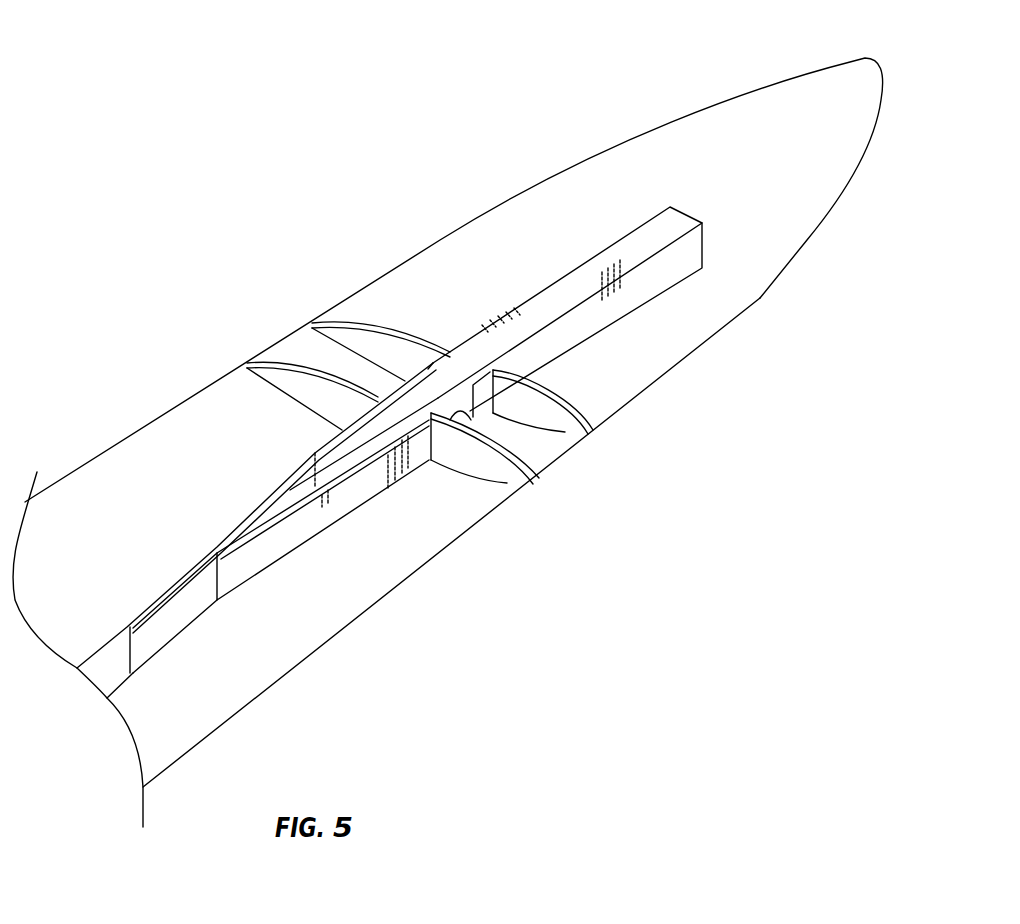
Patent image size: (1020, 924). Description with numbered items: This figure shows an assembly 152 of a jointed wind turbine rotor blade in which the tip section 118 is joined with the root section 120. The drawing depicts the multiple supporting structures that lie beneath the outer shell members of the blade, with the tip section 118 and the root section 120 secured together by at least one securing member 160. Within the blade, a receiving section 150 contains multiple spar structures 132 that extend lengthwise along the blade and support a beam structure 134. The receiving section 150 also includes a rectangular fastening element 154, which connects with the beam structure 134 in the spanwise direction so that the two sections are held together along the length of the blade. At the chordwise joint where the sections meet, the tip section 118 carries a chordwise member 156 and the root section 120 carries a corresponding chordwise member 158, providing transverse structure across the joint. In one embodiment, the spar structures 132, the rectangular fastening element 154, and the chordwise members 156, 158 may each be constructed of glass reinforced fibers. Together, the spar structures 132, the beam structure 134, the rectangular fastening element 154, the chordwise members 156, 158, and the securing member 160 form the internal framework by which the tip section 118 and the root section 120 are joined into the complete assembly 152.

The tip section 118 is at (638, 132).
The root section 120 is at (78, 480).
The spar structures 132 is at (248, 508).
The beam structure 134 is at (615, 268).
The receiving section 150 is at (397, 547).
The assembly 152 is at (167, 214).
The rectangular fastening element 154 is at (322, 467).
The chordwise member 156 is at (585, 403).
The chordwise member 158 is at (500, 483).
The securing member 160 is at (452, 408).